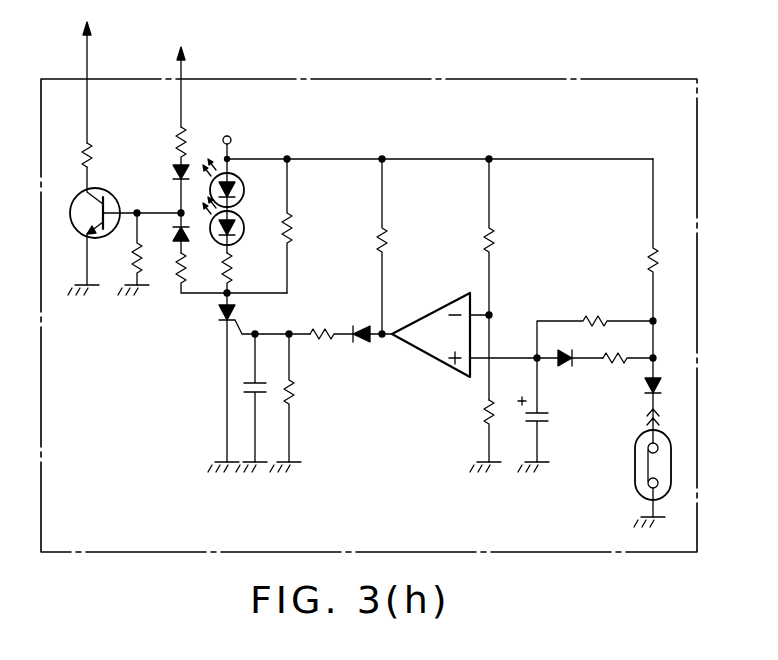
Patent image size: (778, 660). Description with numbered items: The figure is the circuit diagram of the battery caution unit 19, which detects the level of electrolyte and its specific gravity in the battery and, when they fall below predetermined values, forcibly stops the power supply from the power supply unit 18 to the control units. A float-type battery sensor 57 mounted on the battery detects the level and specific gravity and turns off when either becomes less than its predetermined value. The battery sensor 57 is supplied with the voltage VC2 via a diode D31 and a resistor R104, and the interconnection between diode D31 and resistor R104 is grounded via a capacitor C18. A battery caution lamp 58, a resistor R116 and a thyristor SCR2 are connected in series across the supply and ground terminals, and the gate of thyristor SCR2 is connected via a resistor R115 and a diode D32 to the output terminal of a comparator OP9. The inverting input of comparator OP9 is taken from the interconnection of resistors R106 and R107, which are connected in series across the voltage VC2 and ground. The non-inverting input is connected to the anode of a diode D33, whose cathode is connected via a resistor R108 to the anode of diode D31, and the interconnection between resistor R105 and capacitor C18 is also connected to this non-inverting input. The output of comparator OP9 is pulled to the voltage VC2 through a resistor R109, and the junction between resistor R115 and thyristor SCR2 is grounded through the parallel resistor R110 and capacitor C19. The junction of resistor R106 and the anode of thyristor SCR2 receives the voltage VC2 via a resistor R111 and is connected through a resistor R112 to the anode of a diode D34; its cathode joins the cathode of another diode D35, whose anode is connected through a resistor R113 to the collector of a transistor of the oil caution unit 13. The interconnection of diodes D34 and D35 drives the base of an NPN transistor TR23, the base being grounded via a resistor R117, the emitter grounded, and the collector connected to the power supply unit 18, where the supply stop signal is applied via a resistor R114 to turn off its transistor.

The battery caution unit 19 is at (427, 76).
The battery caution lamp 58 is at (254, 180).
The battery sensor 57 is at (635, 481).
The power supply unit 18 is at (194, 71).
The oil caution unit 13 is at (281, 75).
The resistor R113 is at (158, 142).
The resistor R114 is at (112, 154).
The NPN transistor TR23 is at (125, 226).
The diode D35 is at (160, 193).
The diode D34 is at (164, 239).
The resistor R117 is at (117, 249).
The resistor R112 is at (231, 273).
The resistor R116 is at (249, 279).
The voltage VC2 is at (231, 141).
The resistor R111 is at (311, 226).
The thyristor SCR2 is at (235, 383).
The capacitor C19 is at (268, 398).
The resistor R110 is at (314, 398).
The resistor R115 is at (328, 321).
The diode D32 is at (369, 349).
The comparator OP9 is at (415, 359).
The resistor R109 is at (406, 246).
The resistor R106 is at (515, 279).
The resistor R107 is at (462, 431).
The capacitor C18 is at (552, 410).
The resistor R105 is at (595, 326).
The resistor R108 is at (624, 349).
The resistor R104 is at (629, 268).
The diode D33 is at (576, 371).
The diode D31 is at (635, 410).